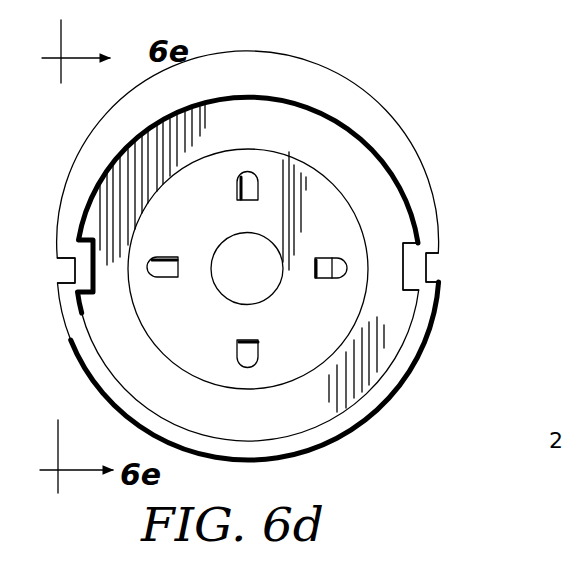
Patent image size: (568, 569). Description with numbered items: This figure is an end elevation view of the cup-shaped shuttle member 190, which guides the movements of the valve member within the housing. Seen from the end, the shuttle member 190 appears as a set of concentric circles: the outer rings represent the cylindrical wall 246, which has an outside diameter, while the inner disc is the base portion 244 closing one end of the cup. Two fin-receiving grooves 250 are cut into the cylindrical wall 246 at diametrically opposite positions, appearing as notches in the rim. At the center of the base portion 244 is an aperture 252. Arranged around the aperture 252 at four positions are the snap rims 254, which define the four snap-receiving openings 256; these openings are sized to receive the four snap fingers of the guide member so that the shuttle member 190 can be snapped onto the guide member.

The shuttle member 190 is at (408, 148).
The base portion 244 is at (317, 418).
The cylindrical wall 246 is at (396, 384).
The fin-receiving grooves 250 is at (60, 259).
The aperture 252 is at (265, 298).
The snap rims 254 is at (247, 172).
The snap-receiving openings 256 is at (236, 191).